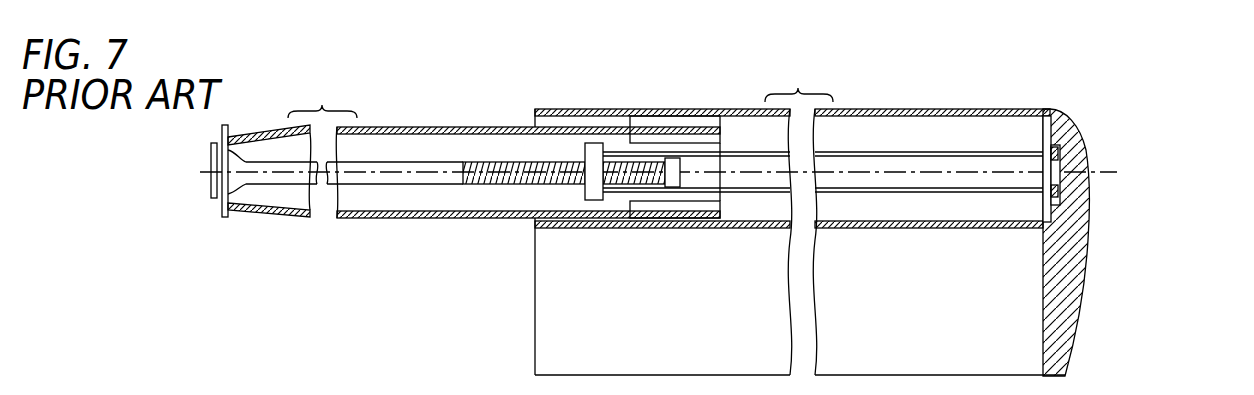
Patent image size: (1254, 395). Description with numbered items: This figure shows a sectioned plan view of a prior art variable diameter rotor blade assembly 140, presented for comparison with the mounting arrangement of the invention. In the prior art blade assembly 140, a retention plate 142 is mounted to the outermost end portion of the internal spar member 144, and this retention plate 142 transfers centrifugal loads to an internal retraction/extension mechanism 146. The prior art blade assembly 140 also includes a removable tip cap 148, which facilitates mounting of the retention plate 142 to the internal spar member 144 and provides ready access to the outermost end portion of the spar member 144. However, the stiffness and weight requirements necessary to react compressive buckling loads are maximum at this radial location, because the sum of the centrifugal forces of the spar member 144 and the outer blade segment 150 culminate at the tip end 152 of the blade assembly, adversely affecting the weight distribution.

The prior art variable diameter rotor blade assembly 140 is at (706, 219).
The retention plate 142 is at (1056, 217).
The internal spar member 144 is at (920, 232).
The internal retraction/extension mechanism 146 is at (918, 147).
The removable tip cap 148 is at (1068, 268).
The outer blade segment 150 is at (1020, 327).
The tip end 152 is at (390, 219).